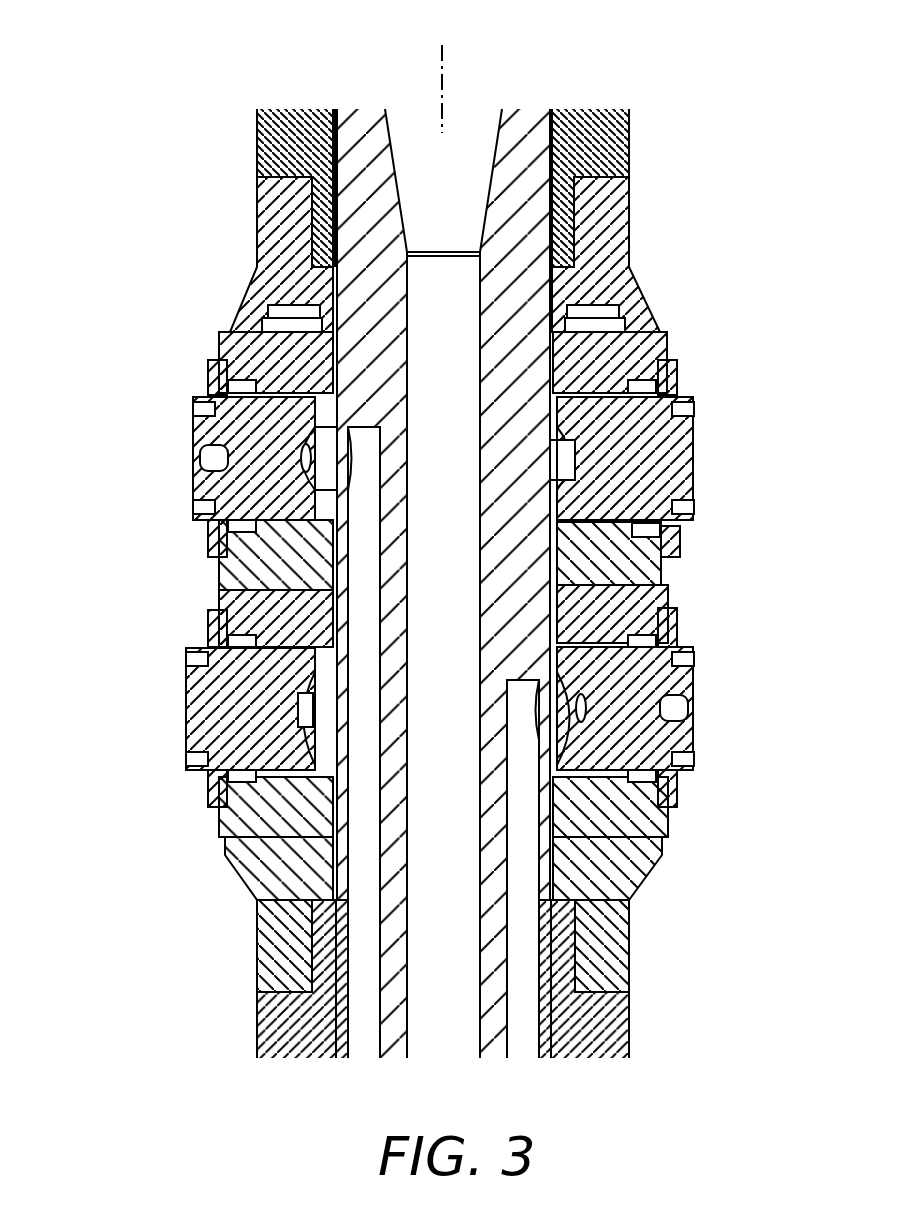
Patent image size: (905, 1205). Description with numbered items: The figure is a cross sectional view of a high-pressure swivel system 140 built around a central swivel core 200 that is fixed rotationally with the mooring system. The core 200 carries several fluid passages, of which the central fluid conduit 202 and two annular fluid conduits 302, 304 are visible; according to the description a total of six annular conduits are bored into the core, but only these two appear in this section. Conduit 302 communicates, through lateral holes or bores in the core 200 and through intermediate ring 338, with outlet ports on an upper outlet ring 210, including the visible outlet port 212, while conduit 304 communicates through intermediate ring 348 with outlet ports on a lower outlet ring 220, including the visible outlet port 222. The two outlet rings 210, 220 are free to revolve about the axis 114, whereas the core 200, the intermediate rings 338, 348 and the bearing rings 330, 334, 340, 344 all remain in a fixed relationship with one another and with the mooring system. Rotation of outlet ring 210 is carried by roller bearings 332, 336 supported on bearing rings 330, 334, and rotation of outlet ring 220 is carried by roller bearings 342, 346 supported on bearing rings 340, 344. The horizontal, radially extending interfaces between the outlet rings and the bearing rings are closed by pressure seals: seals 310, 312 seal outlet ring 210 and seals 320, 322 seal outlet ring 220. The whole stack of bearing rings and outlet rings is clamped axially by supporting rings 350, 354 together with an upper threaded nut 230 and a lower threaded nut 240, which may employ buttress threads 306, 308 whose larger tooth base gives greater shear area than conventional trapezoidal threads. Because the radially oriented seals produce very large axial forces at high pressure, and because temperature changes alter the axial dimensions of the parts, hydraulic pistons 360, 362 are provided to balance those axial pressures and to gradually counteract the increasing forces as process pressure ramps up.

The high-pressure swivel system 140 is at (166, 63).
The axis 114 is at (443, 82).
The central swivel core 200 is at (534, 360).
The central fluid conduit 202 is at (463, 330).
The outlet ring 210 is at (273, 443).
The outlet port 212 is at (200, 458).
The outlet ring 220 is at (263, 745).
The outlet port 222 is at (690, 712).
The upper threaded nut 230 is at (611, 148).
The lower threaded nut 240 is at (611, 1043).
The annular fluid conduit 302 is at (362, 1045).
The annular fluid conduit 304 is at (526, 1045).
The buttress threads 306 is at (538, 212).
The buttress threads 308 is at (538, 972).
The pressure seal 310 is at (678, 360).
The pressure seal 312 is at (240, 560).
The pressure seal 320 is at (678, 610).
The pressure seal 322 is at (652, 862).
The bearing ring 330 is at (308, 373).
The roller bearing 332 is at (690, 400).
The bearing ring 334 is at (618, 576).
The roller bearing 336 is at (680, 575).
The intermediate ring 338 is at (558, 460).
The bearing ring 340 is at (618, 623).
The roller bearing 342 is at (690, 645).
The bearing ring 344 is at (303, 825).
The roller bearing 346 is at (676, 793).
The intermediate ring 348 is at (318, 752).
The supporting ring 350 is at (308, 298).
The supporting ring 354 is at (308, 882).
The hydraulic piston 360 is at (268, 300).
The hydraulic piston 362 is at (258, 318).